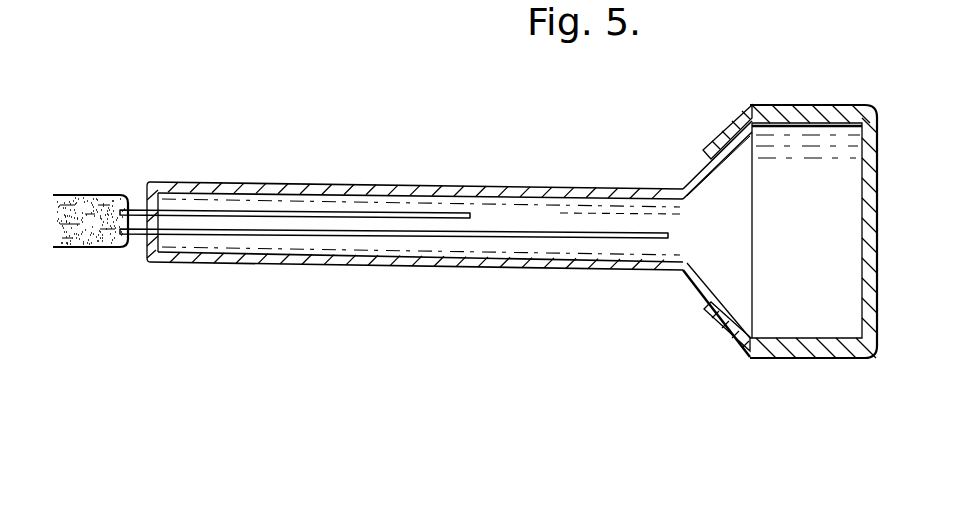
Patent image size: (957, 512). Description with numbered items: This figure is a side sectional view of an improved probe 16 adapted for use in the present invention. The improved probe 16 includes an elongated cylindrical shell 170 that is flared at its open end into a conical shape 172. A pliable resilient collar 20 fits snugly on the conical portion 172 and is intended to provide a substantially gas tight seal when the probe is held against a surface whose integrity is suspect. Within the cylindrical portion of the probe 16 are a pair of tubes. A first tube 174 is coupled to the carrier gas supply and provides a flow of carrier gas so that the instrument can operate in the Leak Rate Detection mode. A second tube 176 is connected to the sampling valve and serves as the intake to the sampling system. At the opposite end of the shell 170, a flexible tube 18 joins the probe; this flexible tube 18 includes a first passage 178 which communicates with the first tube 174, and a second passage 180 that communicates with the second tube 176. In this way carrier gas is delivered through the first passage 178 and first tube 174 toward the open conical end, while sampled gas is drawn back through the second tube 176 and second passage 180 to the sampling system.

The improved probe 16 is at (384, 273).
The flexible tube 18 is at (123, 247).
The pliable resilient collar 20 is at (813, 347).
The elongated cylindrical shell 170 is at (517, 264).
The conical shape 172 is at (728, 282).
The first tube 174 is at (282, 213).
The second tube 176 is at (372, 232).
The first passage 178 is at (90, 203).
The second passage 180 is at (82, 230).